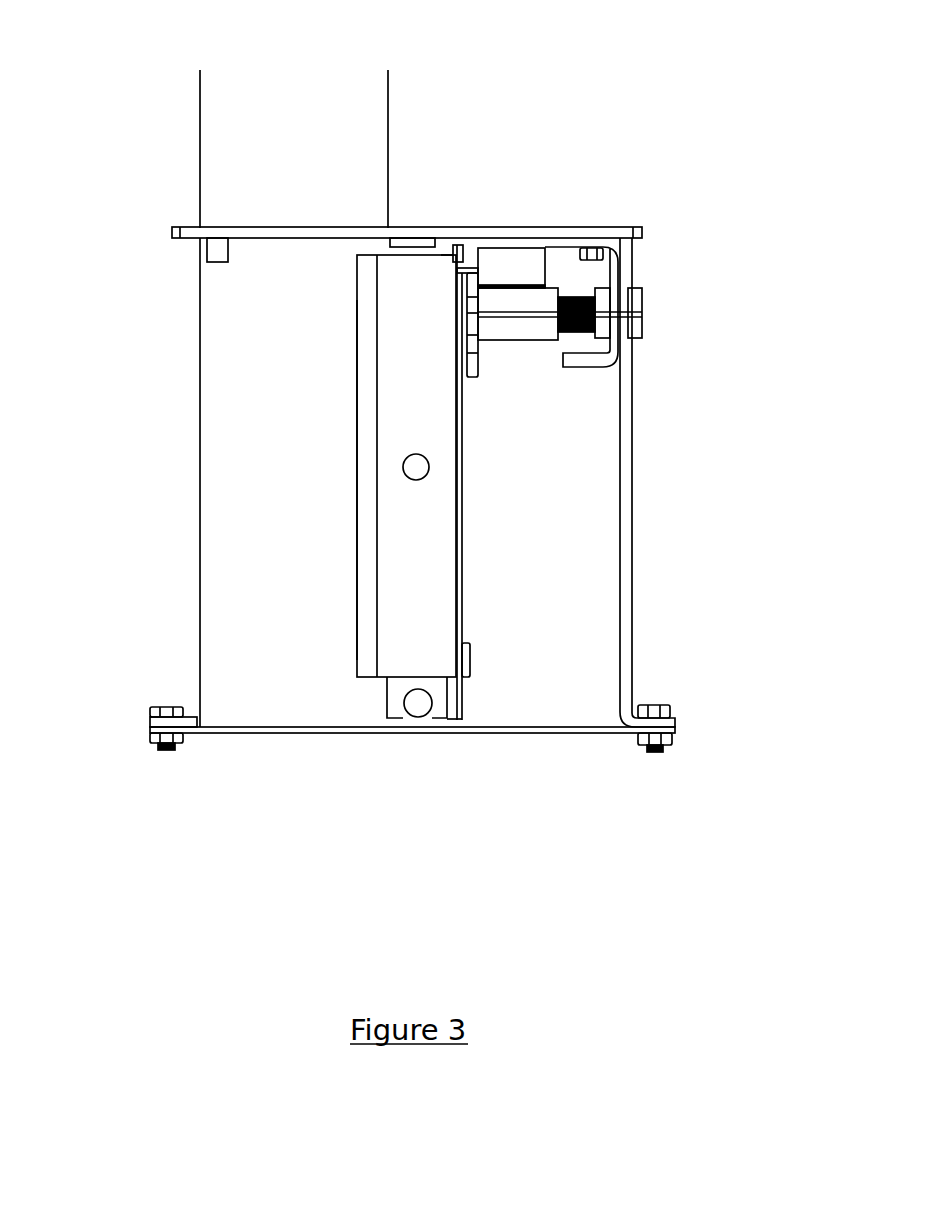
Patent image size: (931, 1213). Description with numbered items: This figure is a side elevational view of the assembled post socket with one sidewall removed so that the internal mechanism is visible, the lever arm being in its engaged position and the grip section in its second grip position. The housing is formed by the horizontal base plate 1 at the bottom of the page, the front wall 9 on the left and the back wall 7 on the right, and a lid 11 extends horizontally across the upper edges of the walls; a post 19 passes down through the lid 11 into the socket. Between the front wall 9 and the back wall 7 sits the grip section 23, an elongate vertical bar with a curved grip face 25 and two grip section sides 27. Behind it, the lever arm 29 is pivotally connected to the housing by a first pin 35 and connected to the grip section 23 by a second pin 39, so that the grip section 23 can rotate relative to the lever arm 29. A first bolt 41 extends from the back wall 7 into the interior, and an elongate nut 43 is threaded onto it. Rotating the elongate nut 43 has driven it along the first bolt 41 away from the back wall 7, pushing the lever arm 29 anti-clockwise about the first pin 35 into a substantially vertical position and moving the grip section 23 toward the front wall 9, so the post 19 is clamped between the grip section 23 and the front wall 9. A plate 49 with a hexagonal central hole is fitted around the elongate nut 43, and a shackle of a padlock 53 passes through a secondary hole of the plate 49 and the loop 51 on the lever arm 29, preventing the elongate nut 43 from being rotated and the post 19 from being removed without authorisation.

The horizontal base plate 1 is at (550, 730).
The back wall 7 is at (630, 545).
The front wall 9 is at (198, 483).
The lid 11 is at (613, 227).
The post 19 is at (198, 177).
The grip section 23 is at (357, 575).
The grip face 25 is at (340, 426).
The grip section sides 27 is at (434, 632).
The lever arm 29 is at (462, 423).
The first pin 35 is at (420, 705).
The second pin 39 is at (420, 467).
The first bolt 41 is at (595, 302).
The elongate nut 43 is at (520, 300).
The plate 49 is at (473, 360).
The loop 51 is at (455, 247).
The padlock 53 is at (510, 262).